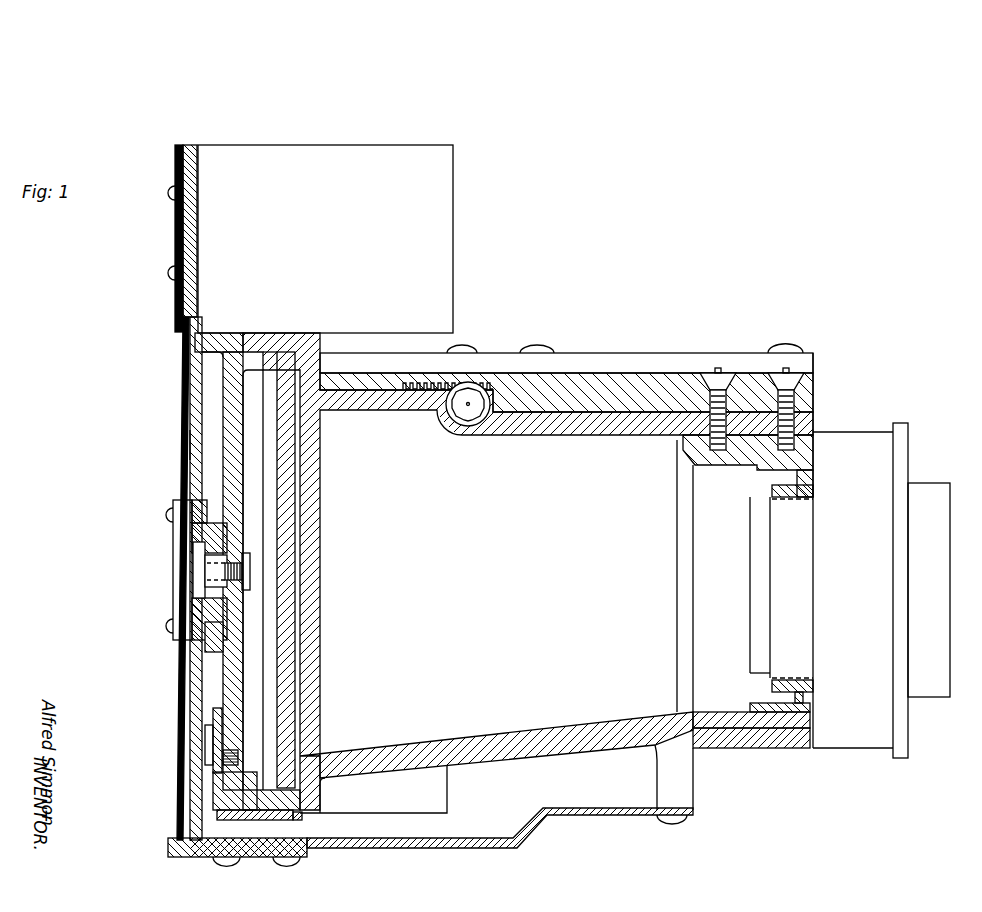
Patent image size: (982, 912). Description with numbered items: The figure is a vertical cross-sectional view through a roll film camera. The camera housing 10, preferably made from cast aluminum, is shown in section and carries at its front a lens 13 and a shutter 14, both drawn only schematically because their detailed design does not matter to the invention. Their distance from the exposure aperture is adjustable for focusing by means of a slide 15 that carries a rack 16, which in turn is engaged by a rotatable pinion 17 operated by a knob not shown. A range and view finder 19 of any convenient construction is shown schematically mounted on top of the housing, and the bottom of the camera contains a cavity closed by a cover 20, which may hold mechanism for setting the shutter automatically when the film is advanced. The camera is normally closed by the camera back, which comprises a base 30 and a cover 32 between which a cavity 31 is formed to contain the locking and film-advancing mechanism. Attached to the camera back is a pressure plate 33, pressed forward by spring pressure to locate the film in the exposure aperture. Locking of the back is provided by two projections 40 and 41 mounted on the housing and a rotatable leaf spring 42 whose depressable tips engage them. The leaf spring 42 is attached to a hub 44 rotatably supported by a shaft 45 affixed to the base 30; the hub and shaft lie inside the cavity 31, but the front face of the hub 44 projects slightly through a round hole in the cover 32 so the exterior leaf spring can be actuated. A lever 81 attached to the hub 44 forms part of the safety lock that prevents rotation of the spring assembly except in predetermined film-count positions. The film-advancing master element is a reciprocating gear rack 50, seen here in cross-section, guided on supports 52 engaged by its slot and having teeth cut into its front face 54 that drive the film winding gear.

The camera housing 10 is at (601, 425).
The lens 13 is at (932, 492).
The shutter 14 is at (862, 440).
The slide 15 is at (578, 388).
The rack 16 is at (418, 396).
The pinion 17 is at (465, 420).
The range and view finder 19 is at (325, 239).
The cover 20 is at (466, 846).
The base 30 is at (233, 400).
The cavity 31 is at (208, 420).
The cover 32 is at (194, 445).
The pressure plate 33 is at (294, 447).
The projection 40 is at (176, 290).
The projection 41 is at (170, 850).
The leaf spring 42 is at (185, 358).
The hub 44 is at (186, 496).
The shaft 45 is at (214, 565).
The gear rack 50 is at (215, 812).
The support 52 is at (212, 737).
The front face 54 is at (303, 815).
The lever 81 is at (215, 643).